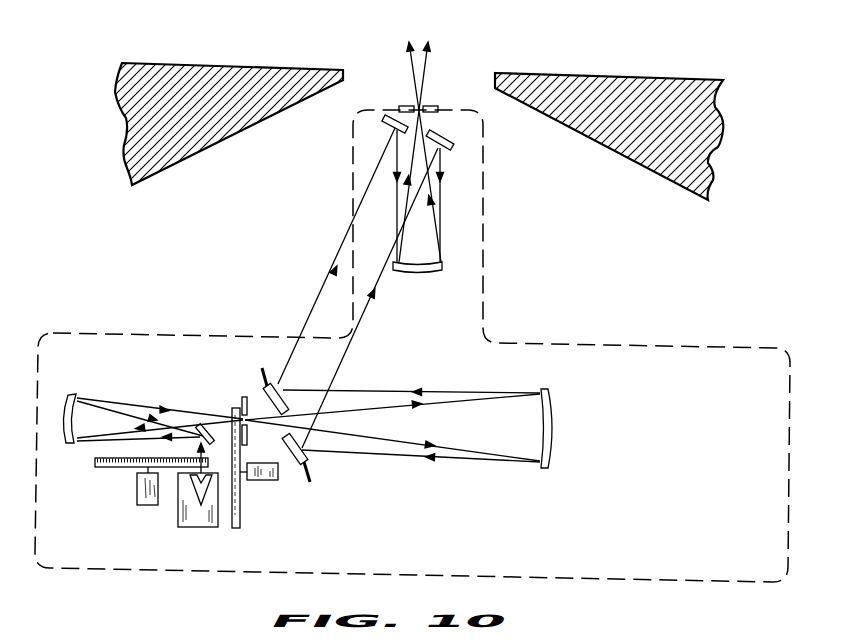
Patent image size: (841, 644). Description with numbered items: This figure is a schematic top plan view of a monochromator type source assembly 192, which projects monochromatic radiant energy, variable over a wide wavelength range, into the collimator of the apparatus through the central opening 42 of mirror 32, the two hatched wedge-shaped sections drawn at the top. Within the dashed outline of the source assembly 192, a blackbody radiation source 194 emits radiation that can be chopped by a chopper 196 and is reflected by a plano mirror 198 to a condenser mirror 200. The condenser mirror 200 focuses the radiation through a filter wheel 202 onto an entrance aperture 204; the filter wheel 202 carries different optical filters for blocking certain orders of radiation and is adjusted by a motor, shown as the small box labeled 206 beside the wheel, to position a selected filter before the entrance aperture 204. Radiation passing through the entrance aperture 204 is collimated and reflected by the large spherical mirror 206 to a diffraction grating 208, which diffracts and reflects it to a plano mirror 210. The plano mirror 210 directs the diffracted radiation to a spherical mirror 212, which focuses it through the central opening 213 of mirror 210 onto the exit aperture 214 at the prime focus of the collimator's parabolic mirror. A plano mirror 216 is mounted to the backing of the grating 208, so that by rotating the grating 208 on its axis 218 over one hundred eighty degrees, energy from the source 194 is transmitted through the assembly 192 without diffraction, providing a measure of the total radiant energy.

The mirror 32 is at (238, 66).
The central opening 42 is at (468, 80).
The monochromator source assembly 192 is at (600, 302).
The blackbody radiation source 194 is at (180, 521).
The chopper 196 is at (107, 468).
The plano mirror 198 is at (213, 423).
The condenser mirror 200 is at (70, 393).
The filter wheel 202 is at (240, 524).
The entrance aperture 204 is at (248, 414).
The spherical mirror 206 is at (553, 432).
The diffraction grating 208 is at (307, 456).
The plano mirror 210 is at (453, 147).
The spherical mirror 212 is at (412, 270).
The central opening 213 is at (437, 118).
The exit aperture 214 is at (414, 106).
The plano mirror 216 is at (303, 473).
The axis 218 is at (276, 358).